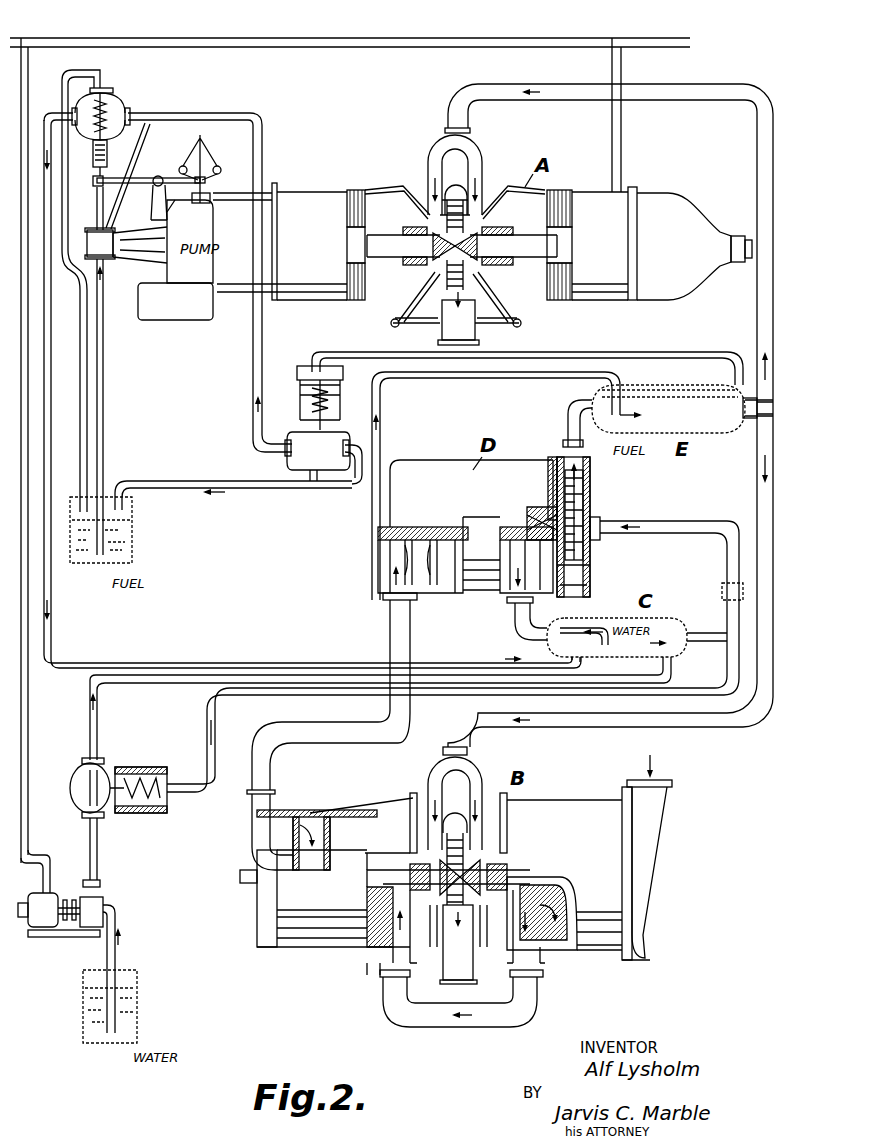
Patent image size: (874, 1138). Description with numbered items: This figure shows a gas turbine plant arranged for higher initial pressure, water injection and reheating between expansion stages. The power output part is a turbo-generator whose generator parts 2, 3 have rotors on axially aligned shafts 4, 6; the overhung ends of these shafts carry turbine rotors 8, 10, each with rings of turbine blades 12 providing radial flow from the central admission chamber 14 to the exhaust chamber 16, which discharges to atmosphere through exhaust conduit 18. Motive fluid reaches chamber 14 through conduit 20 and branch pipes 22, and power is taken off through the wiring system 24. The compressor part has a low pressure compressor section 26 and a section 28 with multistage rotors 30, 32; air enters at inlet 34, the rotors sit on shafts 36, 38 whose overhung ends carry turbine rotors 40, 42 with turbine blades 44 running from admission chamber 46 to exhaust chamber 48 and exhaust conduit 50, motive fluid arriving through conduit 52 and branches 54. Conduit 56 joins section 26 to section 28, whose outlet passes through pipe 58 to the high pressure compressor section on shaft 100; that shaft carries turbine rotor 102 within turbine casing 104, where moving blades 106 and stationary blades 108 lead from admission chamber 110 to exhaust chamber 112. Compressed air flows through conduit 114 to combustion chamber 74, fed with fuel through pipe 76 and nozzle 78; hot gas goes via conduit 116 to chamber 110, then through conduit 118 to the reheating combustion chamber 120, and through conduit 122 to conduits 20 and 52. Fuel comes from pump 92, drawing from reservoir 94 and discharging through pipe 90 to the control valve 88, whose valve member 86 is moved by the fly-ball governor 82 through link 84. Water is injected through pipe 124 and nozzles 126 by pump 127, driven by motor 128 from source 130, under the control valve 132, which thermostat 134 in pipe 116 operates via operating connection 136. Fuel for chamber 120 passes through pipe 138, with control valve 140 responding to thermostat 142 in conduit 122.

The generator part 2 is at (565, 193).
The generator part 3 is at (358, 192).
The shaft 4 is at (522, 240).
The shaft 6 is at (390, 237).
The turbine rotor 8 is at (473, 288).
The turbine rotor 10 is at (445, 284).
The turbine blades 12 is at (486, 194).
The central admission chamber 14 is at (422, 277).
The exhaust chamber 16 is at (457, 190).
The exhaust conduit 18 is at (450, 333).
The conduit 20 is at (737, 97).
The branch pipes 22 is at (436, 152).
The wiring system 24 is at (486, 46).
The low pressure compressor section 26 is at (598, 790).
The high pressure compressor section 28 is at (352, 824).
The multiple-stage rotor 30 is at (533, 881).
The multiple-stage rotor 32 is at (405, 878).
The inlet 34 is at (660, 780).
The shaft 36 is at (504, 870).
The shaft 38 is at (410, 871).
The turbine rotor 40 is at (482, 788).
The turbine rotor 42 is at (423, 786).
The turbine blades 44 is at (458, 938).
The central admission chamber 46 is at (438, 917).
The exhaust chamber 48 is at (457, 812).
The exhaust conduit 50 is at (453, 985).
The conduit 52 is at (634, 720).
The branches 54 is at (443, 765).
The conduit 56 is at (439, 1023).
The pipe 58 is at (394, 642).
The combustion chamber 74 is at (600, 627).
The pipe 76 is at (195, 668).
The nozzle 78 is at (592, 655).
The fly-ball governor 82 is at (213, 149).
The link 84 is at (150, 186).
The valve member 86 is at (100, 112).
The control valve 88 is at (108, 145).
The pipe 90 is at (147, 145).
The pump 92 is at (100, 227).
The reservoir 94 is at (134, 556).
The shaft 100 is at (545, 515).
The turbine rotor 102 is at (553, 498).
The turbine casing 104 is at (588, 483).
The turbine blades 106 is at (588, 502).
The stationary turbine blades 108 is at (592, 552).
The central admission chamber 110 is at (598, 512).
The exhaust chamber 112 is at (591, 574).
The conduit 114 is at (517, 627).
The conduit 116 is at (725, 551).
The conduit 118 is at (567, 433).
The combustion chamber 120 is at (655, 397).
The conduit 122 is at (746, 420).
The pipe 124 is at (93, 735).
The nozzles 126 is at (668, 636).
The pump 127 is at (98, 897).
The motor 128 is at (47, 917).
The source 130 is at (138, 1028).
The control valve 132 is at (118, 812).
The thermostat 134 is at (724, 590).
The operating connection 136 is at (292, 692).
The pipe 138 is at (255, 400).
The control valve 140 is at (300, 462).
The thermostat 142 is at (729, 405).